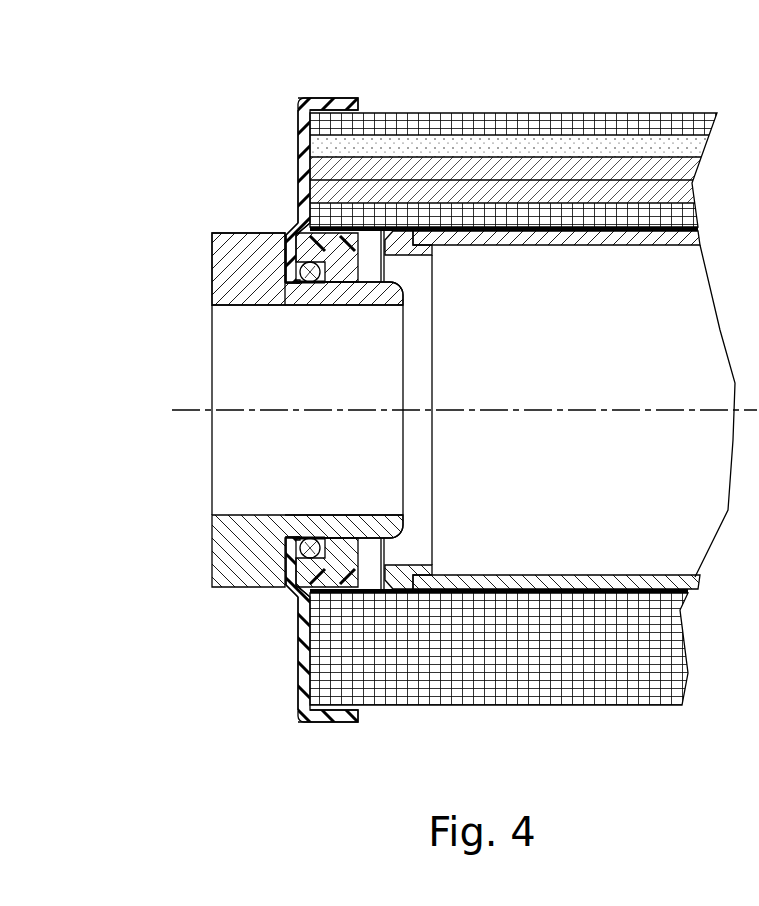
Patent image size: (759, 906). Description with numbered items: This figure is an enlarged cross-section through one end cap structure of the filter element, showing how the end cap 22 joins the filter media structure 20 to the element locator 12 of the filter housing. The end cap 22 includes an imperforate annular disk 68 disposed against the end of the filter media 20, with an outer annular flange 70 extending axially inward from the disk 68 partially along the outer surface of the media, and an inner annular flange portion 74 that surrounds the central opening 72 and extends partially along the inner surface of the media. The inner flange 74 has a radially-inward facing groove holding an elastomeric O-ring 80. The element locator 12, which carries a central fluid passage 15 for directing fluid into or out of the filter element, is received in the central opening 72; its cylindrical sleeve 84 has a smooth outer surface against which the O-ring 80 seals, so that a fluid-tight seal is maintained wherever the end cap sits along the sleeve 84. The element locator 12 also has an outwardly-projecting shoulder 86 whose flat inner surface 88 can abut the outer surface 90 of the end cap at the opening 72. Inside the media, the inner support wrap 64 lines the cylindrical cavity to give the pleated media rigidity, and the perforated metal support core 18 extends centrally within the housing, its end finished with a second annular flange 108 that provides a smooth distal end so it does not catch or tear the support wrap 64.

The element locator 12 is at (223, 233).
The central fluid passage 15 is at (232, 460).
The support core 18 is at (563, 250).
The filter media structure 20 is at (538, 90).
The end cap 22 is at (298, 140).
The inner support wrap 64 is at (672, 231).
The imperforate annular disk 68 is at (298, 160).
The outer annular flange 70 is at (344, 97).
The central opening 72 is at (332, 287).
The inner annular flange portion 74 is at (347, 257).
The O-ring 80 is at (308, 280).
The cylindrical sleeve 84 is at (367, 300).
The outwardly-projecting shoulder 86 is at (233, 270).
The flat inner surface 88 is at (293, 233).
The outer surface 90 is at (285, 268).
The second annular flange 108 is at (408, 565).